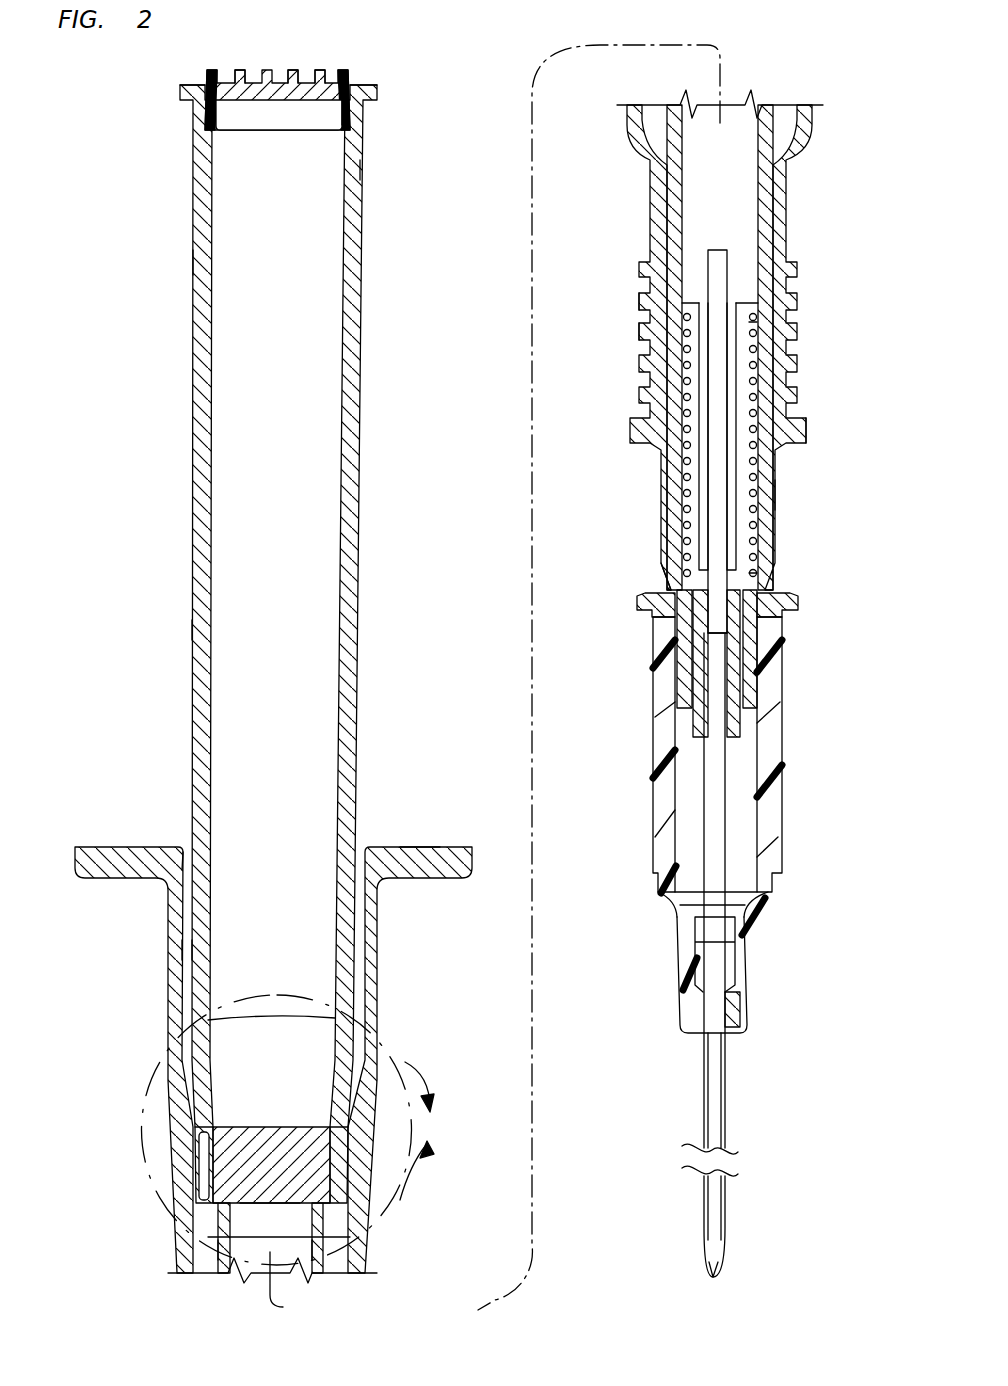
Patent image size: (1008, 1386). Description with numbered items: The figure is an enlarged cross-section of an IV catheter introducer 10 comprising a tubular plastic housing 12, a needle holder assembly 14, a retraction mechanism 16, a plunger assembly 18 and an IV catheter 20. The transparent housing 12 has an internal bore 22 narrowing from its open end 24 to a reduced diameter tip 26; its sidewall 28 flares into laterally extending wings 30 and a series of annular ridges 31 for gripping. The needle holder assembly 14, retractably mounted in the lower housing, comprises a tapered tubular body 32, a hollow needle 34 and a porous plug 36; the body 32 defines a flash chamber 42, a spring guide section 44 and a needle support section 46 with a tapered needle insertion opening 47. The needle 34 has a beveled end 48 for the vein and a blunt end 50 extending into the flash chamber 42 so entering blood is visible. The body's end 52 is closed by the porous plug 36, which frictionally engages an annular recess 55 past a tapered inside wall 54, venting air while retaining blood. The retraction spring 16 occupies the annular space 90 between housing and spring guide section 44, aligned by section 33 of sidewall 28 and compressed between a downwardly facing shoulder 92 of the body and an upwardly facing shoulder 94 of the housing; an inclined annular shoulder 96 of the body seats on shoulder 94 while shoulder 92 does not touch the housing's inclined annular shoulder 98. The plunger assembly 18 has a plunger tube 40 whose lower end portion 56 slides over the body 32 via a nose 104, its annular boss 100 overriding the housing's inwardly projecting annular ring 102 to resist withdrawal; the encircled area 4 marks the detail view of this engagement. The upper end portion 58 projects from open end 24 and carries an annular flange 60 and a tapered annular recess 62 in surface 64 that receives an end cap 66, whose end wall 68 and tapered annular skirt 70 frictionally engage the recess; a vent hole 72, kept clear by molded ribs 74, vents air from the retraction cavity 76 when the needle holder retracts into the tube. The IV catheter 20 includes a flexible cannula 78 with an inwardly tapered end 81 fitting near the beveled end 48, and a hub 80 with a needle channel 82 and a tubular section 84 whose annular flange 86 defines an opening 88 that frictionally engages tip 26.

The detail view indicator 4 is at (420, 1131).
The IV catheter introducer 10 is at (755, 67).
The tubular plastic housing 12 is at (378, 946).
The needle holder assembly 14 is at (216, 1254).
The retraction mechanism 16 is at (777, 343).
The plunger assembly 18 is at (192, 630).
The IV catheter 20 is at (662, 908).
The internal bore 22 is at (183, 846).
The open end 24 is at (166, 894).
The reduced diameter tip 26 is at (680, 670).
The sidewall 28 is at (168, 945).
The laterally extending wings 30 is at (412, 845).
The annular ridges 31 is at (640, 330).
The tubular body 32 is at (322, 1252).
The section of sidewall 33 is at (777, 497).
The needle 34 is at (712, 777).
The porous plug 36 is at (263, 1197).
The plunger tube 40 is at (195, 265).
The flash chamber 42 is at (740, 180).
The spring guide section 44 is at (695, 467).
The needle support section 46 is at (692, 620).
The tapered needle insertion opening 47 is at (782, 787).
The beveled end 48 is at (708, 1248).
The blunt end 50 is at (723, 250).
The end 52 is at (215, 1128).
The tapered inside wall 54 is at (317, 1127).
The annular recess 55 is at (290, 1128).
The lower end portion 56 is at (191, 1176).
The upper end portion 58 is at (194, 130).
The annular flange 60 is at (180, 88).
The tapered annular recess 62 is at (345, 120).
The surface 64 is at (352, 170).
The end cap 66 is at (320, 72).
The end wall 68 is at (235, 78).
The annular skirt 70 is at (240, 115).
The vent hole 72 is at (283, 85).
The ribs 74 is at (207, 75).
The retraction cavity 76 is at (262, 296).
The cannula 78 is at (727, 1062).
The hub 80 is at (773, 705).
The inwardly tapered end 81 is at (723, 1217).
The needle channel 82 is at (700, 955).
The tubular section 84 is at (680, 815).
The annular flange 86 is at (790, 602).
The opening 88 is at (660, 588).
The annular space 90 is at (670, 390).
The downwardly facing shoulder 92 is at (760, 322).
The upwardly facing shoulder 94 is at (756, 577).
The inclined annular shoulder 96 is at (637, 605).
The inclined annular shoulder 98 is at (672, 415).
The annular boss 100 is at (185, 1080).
The annular ring 102 is at (185, 1050).
The nose 104 is at (208, 1237).